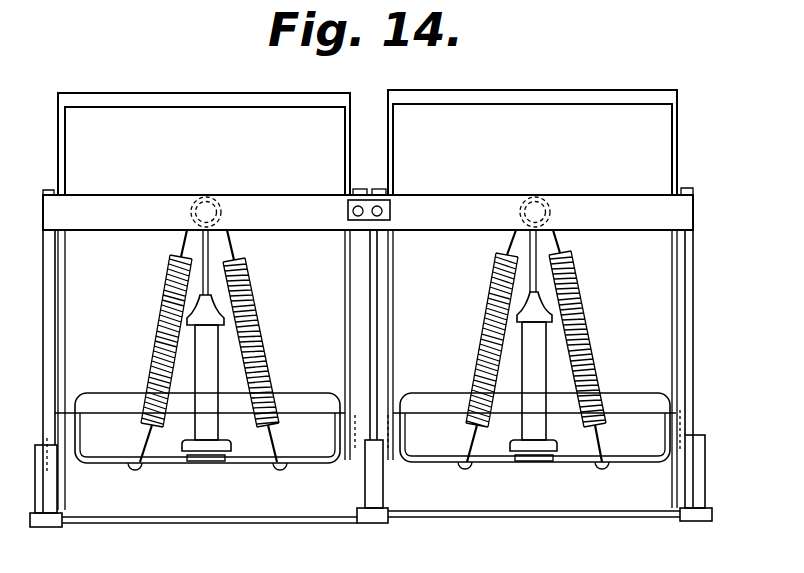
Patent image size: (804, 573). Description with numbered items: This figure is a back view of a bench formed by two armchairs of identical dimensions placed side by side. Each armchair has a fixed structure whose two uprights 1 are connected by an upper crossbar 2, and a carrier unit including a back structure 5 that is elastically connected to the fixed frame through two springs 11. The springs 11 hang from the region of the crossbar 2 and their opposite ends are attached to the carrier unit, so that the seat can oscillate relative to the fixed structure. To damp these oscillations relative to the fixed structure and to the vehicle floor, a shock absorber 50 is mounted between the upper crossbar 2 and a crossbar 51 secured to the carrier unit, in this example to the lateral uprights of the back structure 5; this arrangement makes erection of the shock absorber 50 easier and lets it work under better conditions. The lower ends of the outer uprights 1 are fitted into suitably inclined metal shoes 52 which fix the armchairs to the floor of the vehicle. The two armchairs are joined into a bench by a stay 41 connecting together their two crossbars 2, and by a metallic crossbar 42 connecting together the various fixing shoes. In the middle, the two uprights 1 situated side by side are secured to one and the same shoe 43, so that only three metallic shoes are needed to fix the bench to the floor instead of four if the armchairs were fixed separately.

The upright 1 is at (47, 266).
The crossbar 2 is at (126, 210).
The back structure 5 is at (66, 308).
The spring 11 is at (250, 312).
The stay 41 is at (368, 205).
The metallic crossbar 42 is at (478, 518).
The shoe 43 is at (372, 497).
The shock absorber 50 is at (208, 380).
The crossbar 51 is at (495, 463).
The metal shoe 52 is at (45, 492).